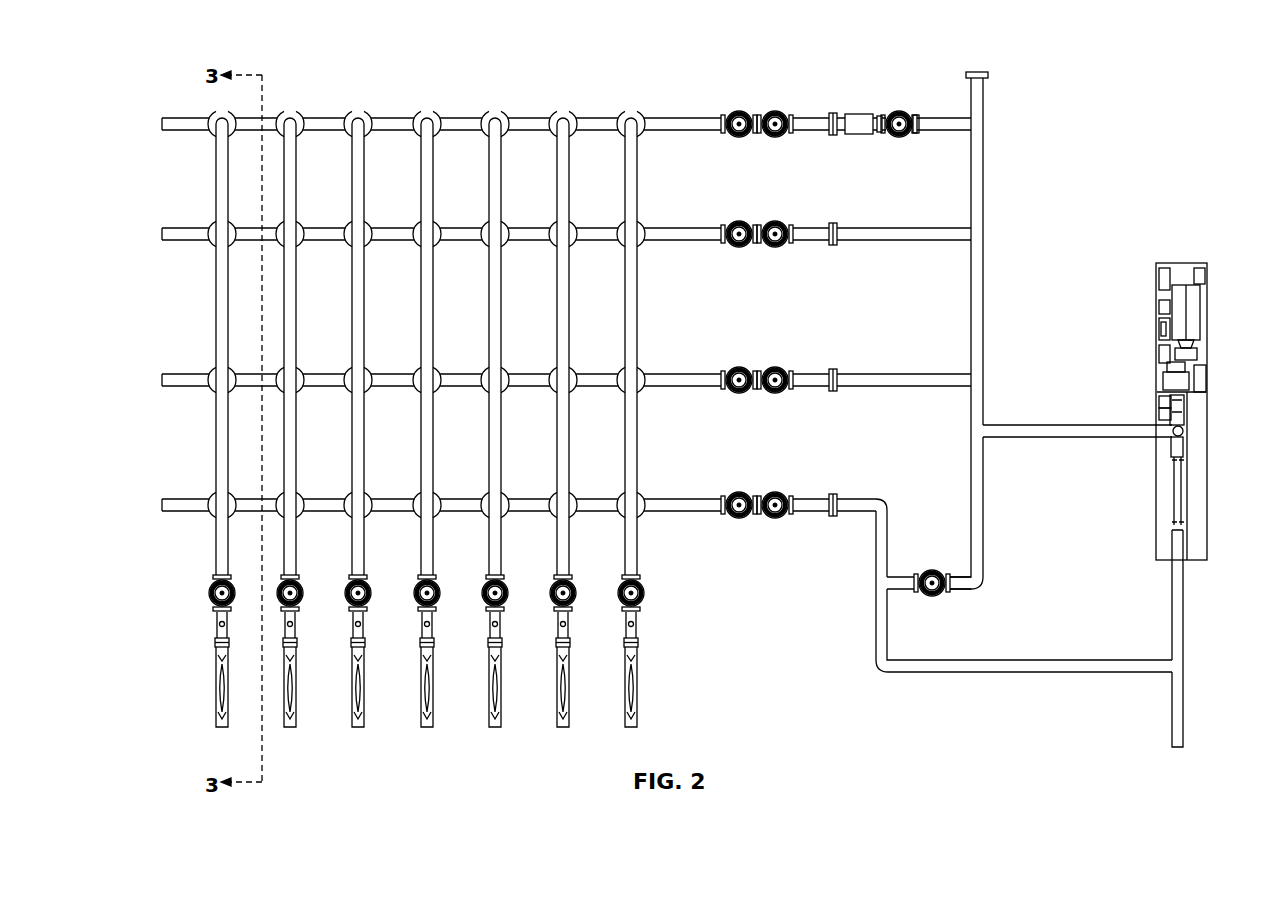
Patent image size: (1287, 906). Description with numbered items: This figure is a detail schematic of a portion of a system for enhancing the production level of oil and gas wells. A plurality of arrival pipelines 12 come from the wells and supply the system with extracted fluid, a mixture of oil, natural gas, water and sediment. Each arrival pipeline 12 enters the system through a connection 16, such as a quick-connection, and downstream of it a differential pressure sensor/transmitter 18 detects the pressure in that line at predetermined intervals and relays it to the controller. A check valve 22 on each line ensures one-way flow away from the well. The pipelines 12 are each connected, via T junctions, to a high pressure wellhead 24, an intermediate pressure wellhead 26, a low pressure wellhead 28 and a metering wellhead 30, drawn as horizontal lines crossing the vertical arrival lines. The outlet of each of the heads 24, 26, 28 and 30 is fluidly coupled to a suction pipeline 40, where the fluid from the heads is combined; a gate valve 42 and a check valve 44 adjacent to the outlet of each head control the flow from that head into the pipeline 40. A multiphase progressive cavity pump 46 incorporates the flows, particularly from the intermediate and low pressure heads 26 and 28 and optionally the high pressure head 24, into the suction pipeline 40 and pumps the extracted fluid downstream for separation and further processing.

The arrival pipeline 12 is at (215, 686).
The connection 16 is at (215, 644).
The differential pressure sensor/transmitter 18 is at (216, 623).
The check valve 22 is at (210, 585).
The high pressure wellhead 24 is at (673, 498).
The intermediate pressure wellhead 26 is at (673, 373).
The low pressure wellhead 28 is at (673, 227).
The metering wellhead 30 is at (673, 117).
The suction pipeline 40 is at (985, 313).
The gate valve 42 is at (740, 110).
The check valve 44 is at (776, 110).
The progressive cavity pump 46 is at (1207, 353).